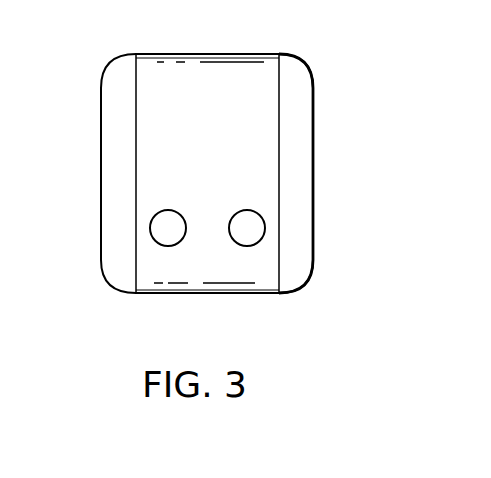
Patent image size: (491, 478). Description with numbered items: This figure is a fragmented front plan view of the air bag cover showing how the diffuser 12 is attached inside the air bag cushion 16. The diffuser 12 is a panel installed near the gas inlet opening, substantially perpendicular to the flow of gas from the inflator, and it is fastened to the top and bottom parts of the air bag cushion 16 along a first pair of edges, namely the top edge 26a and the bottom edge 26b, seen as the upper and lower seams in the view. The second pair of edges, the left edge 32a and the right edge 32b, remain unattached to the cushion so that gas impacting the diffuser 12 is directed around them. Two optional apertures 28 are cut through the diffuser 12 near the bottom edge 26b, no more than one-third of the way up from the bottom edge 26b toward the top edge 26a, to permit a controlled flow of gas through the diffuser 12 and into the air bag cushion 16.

The diffuser 12 is at (157, 73).
The air bag cushion 16 is at (114, 292).
The top edge 26a is at (212, 53).
The bottom edge 26b is at (222, 296).
The apertures 28 is at (228, 221).
The left edge 32a is at (136, 113).
The right edge 32b is at (279, 120).